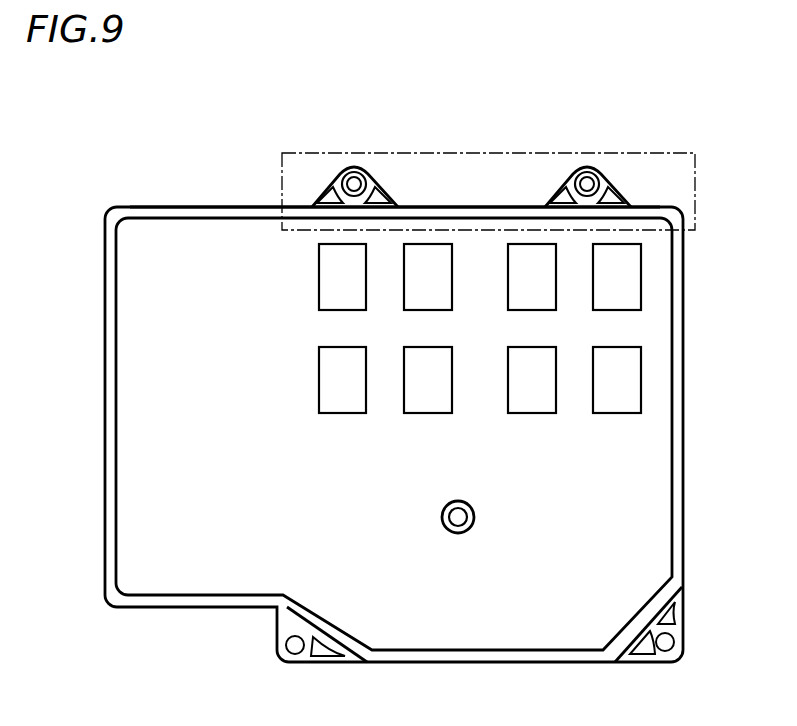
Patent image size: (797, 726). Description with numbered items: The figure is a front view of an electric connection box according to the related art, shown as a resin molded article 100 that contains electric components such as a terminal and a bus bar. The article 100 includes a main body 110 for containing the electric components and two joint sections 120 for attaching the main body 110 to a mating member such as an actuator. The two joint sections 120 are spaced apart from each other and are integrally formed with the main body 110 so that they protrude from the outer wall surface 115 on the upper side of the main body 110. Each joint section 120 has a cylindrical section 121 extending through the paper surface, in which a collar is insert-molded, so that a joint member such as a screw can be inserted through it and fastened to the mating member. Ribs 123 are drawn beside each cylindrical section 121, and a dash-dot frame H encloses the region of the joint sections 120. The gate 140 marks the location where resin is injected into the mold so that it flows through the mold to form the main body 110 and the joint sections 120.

The resin molded article 100 is at (163, 168).
The main body 110 is at (660, 481).
The outer wall surface 115 is at (233, 215).
The joint section 120 is at (377, 168).
The cylindrical section 121 is at (356, 166).
The reinforcing rib 123 is at (320, 192).
The gate 140 is at (474, 514).
The mounting region H is at (695, 185).